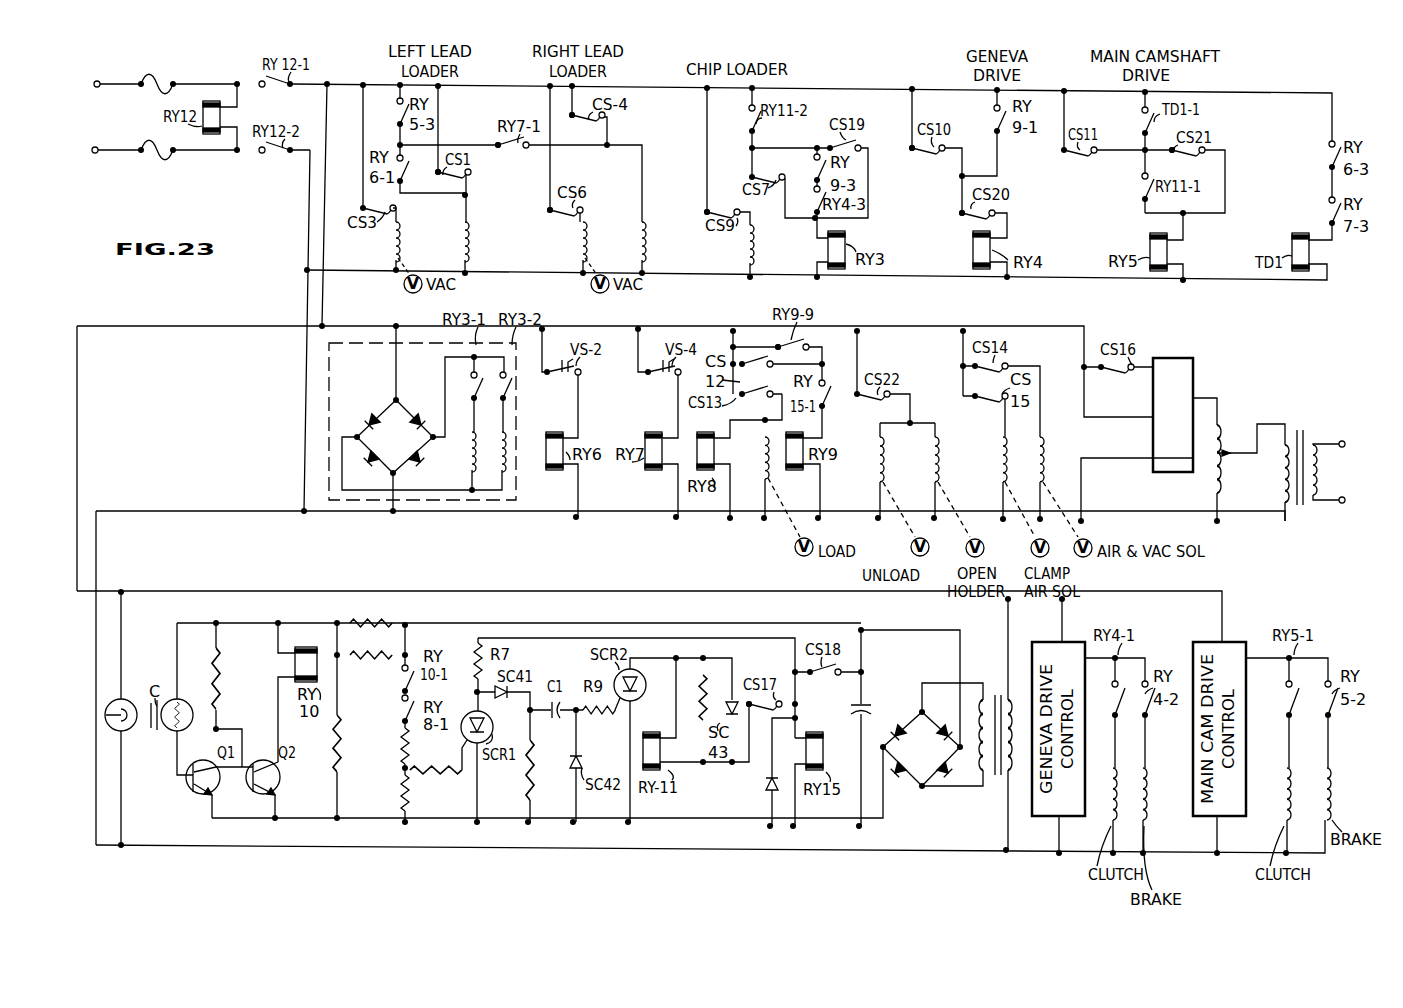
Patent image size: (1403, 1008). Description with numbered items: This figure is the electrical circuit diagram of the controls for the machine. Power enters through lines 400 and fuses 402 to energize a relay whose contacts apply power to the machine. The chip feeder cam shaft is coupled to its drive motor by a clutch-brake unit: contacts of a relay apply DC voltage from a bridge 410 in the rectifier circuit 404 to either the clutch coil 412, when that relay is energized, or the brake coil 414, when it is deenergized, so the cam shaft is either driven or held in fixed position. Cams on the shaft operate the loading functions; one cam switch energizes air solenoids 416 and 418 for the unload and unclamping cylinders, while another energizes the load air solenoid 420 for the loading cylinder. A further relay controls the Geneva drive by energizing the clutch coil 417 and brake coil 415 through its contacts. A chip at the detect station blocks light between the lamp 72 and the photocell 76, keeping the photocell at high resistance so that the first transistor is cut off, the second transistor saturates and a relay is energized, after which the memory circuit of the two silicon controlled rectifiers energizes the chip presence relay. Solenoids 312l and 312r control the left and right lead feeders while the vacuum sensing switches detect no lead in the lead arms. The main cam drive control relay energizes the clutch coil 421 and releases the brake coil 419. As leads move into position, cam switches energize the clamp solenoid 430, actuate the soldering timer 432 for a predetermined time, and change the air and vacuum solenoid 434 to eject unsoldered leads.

The lines 400 is at (117, 86).
The fuses 402 is at (155, 82).
The rectifier circuit 404 is at (370, 343).
The bridge 410 is at (385, 406).
The clutch coil 412 is at (468, 466).
The brake coil 414 is at (746, 252).
The air solenoid 416 is at (874, 454).
The air solenoid 418 is at (930, 454).
The air solenoid 420 is at (748, 458).
The clamp solenoid 430 is at (996, 456).
The soldering timer 432 is at (1180, 362).
The air and vacuum solenoid 434 is at (1045, 456).
The brake coil 415 is at (1146, 780).
The clutch coil 417 is at (1119, 776).
The brake coil 419 is at (1332, 790).
The clutch coil 421 is at (1292, 776).
The bulb 72 is at (140, 696).
The detector 76 is at (197, 697).
The solenoid 312l is at (468, 250).
The solenoid 312r is at (644, 255).